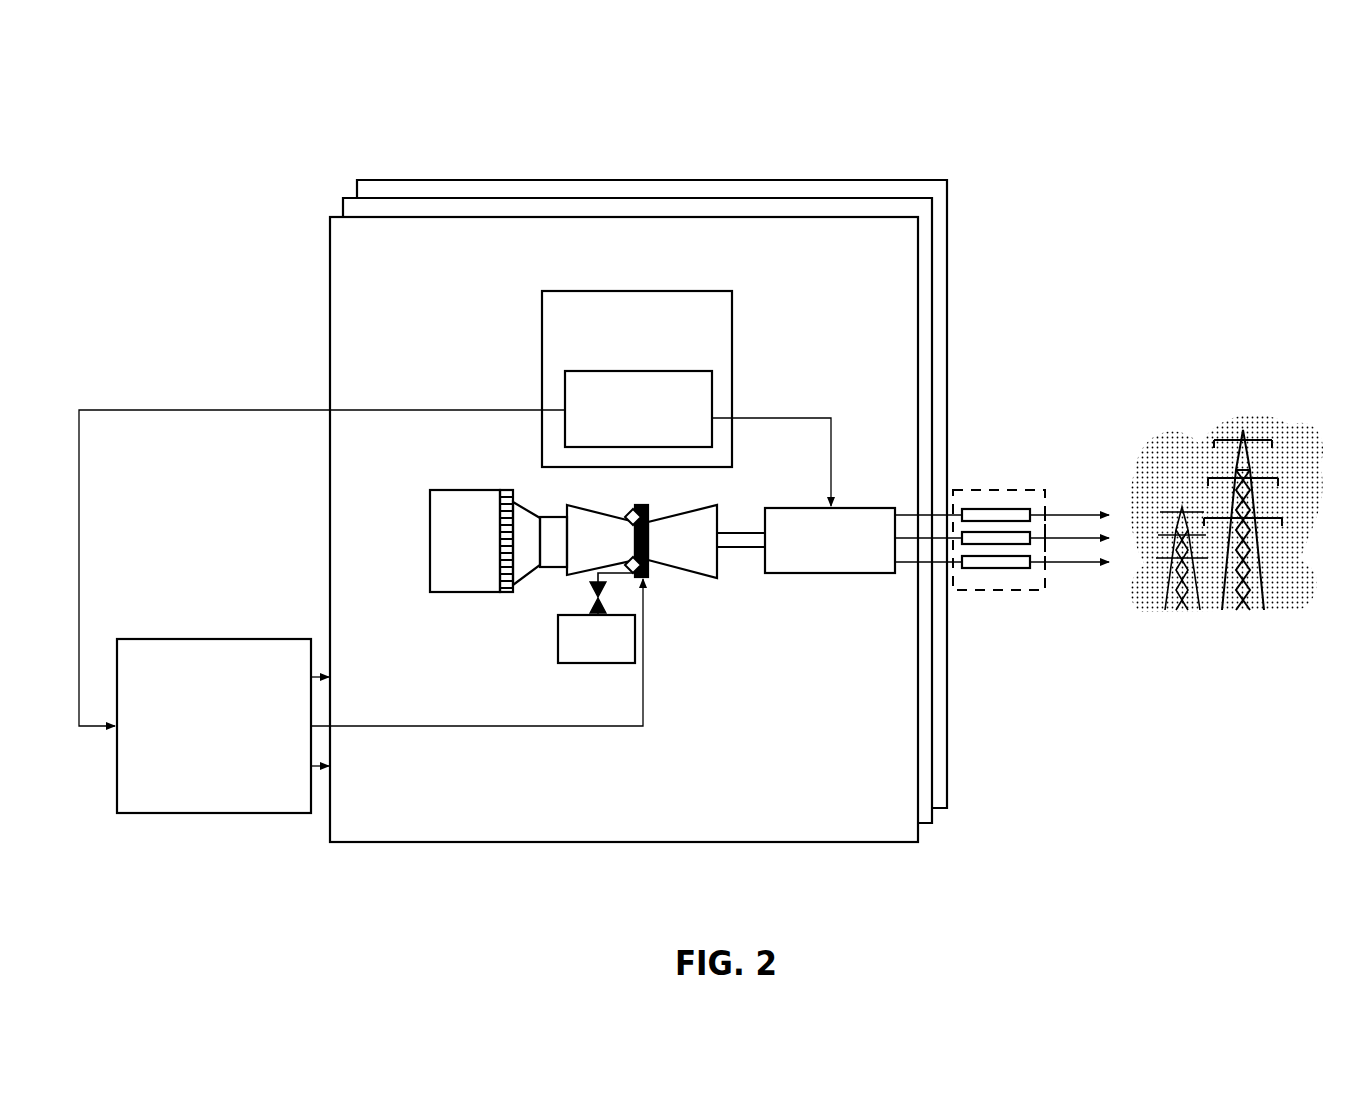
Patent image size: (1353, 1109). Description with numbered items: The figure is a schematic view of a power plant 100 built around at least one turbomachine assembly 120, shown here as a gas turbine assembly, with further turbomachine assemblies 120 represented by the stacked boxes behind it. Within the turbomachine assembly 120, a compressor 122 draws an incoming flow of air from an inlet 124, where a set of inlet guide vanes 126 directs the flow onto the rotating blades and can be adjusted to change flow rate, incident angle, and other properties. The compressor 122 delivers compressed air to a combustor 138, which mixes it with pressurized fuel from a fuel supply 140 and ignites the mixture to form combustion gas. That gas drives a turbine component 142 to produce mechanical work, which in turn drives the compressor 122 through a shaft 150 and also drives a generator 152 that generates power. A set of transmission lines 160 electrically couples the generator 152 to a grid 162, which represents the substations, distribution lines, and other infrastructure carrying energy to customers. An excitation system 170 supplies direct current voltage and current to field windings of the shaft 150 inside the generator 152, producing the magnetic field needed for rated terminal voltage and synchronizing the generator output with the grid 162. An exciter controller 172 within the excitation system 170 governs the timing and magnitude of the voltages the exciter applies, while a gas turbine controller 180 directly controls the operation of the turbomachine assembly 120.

The power plant 100 is at (213, 132).
The turbomachine assembly 120 is at (995, 150).
The compressor 122 is at (535, 558).
The inlet 124 is at (465, 541).
The inlet guide vanes 126 is at (508, 592).
The combustor 138 is at (601, 540).
The fuel supply 140 is at (596, 618).
The turbine component 142 is at (682, 541).
The shaft 150 is at (737, 548).
The generator 152 is at (937, 540).
The transmission lines 160 is at (1033, 590).
The grid 162 is at (1218, 597).
The excitation system 170 is at (637, 379).
The exciter controller 172 is at (698, 438).
The gas turbine controller 180 is at (361, 611).